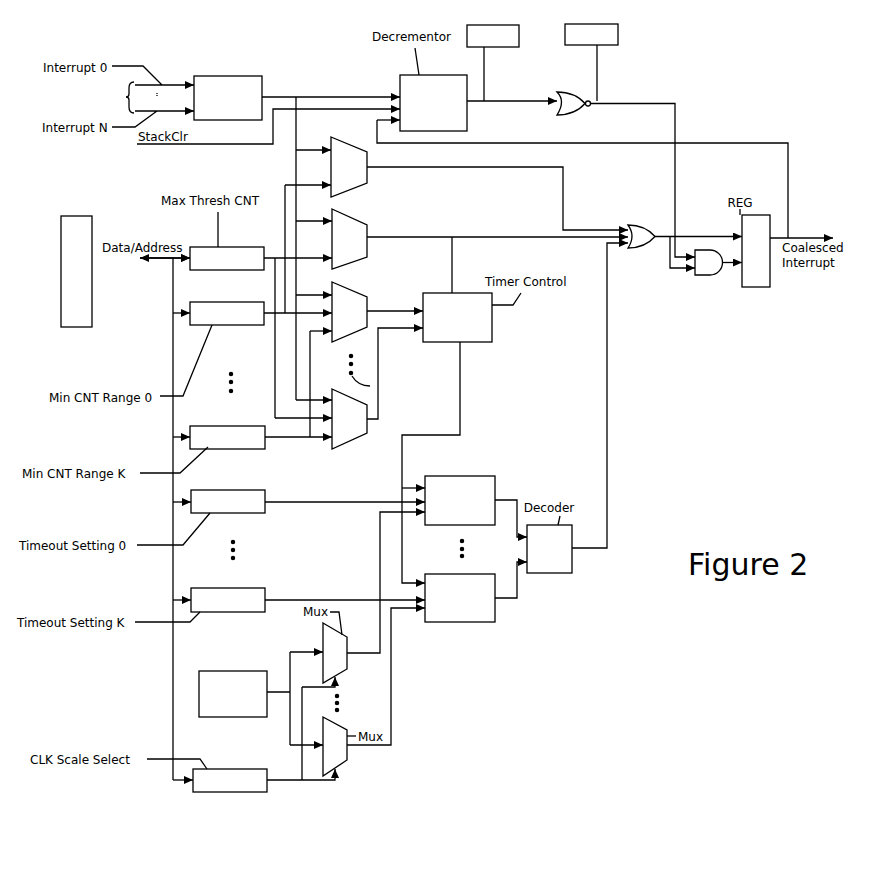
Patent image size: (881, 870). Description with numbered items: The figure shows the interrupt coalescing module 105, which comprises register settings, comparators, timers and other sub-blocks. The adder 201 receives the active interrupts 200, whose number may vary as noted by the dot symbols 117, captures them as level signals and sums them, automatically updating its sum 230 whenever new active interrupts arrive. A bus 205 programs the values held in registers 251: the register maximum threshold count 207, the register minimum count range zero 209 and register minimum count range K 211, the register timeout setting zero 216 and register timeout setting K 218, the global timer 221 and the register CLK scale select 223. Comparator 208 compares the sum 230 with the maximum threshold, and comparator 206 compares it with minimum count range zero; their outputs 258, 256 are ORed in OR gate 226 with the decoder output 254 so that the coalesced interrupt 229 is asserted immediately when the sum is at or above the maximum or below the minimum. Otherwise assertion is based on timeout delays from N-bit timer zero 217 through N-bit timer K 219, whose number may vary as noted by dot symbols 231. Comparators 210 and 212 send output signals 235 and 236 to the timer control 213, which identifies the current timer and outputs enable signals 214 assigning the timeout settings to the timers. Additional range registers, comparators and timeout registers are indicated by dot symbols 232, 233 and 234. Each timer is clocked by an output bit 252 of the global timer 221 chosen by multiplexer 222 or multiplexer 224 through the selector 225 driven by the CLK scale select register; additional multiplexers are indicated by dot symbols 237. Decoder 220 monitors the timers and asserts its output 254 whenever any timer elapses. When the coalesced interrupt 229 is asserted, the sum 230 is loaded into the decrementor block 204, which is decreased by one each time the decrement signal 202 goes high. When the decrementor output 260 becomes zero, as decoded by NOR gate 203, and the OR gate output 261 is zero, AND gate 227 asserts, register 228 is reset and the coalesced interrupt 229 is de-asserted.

The interrupt coalescing module 105 is at (729, 118).
The dot symbols 117 is at (158, 90).
The active interrupts 200 is at (113, 97).
The adder 201 is at (218, 114).
The decrement signal 202 is at (143, 145).
The NOR gate 203 is at (578, 132).
The decrementor block 204 is at (438, 98).
The bus 205 is at (141, 261).
The comparator 206 is at (341, 180).
The register maximum threshold count 207 is at (244, 248).
The comparator 208 is at (341, 252).
The register minimum count range 0 209 is at (222, 302).
The comparator 210 is at (341, 325).
The register minimum count range K 211 is at (222, 426).
The comparator 212 is at (341, 432).
The timer control 213 is at (447, 336).
The enable signals 214 is at (460, 401).
The register timeout setting 0 216 is at (224, 490).
The N-bit timer_0 217 is at (496, 484).
The register timeout setting K 218 is at (241, 588).
The N-bit timer_K 219 is at (487, 622).
The decoder 220 is at (564, 573).
The global timer 221 is at (243, 712).
The multiplexer 222 is at (347, 663).
The register CLK scale select 223 is at (220, 791).
The multiplexer 224 is at (347, 761).
The selector 225 is at (293, 781).
The OR gate 226 is at (643, 248).
The AND gate 227 is at (708, 275).
The register 228 is at (746, 284).
The coalesced interrupt 229 is at (793, 237).
The sum 230 is at (335, 95).
The dot symbols 231 is at (464, 541).
The dot symbols 232 is at (232, 373).
The dot symbols 233 is at (378, 388).
The dot symbols 234 is at (235, 541).
The output signal 235 is at (398, 308).
The output signal 236 is at (402, 332).
The dot symbols 237 is at (348, 701).
The registers 251 is at (79, 320).
The output bit 252 is at (277, 692).
The decoder output 254 is at (607, 366).
The comparator output 256 is at (440, 167).
The comparator output 258 is at (428, 237).
The decrementor output 260 is at (521, 100).
The OR gate output 261 is at (708, 236).